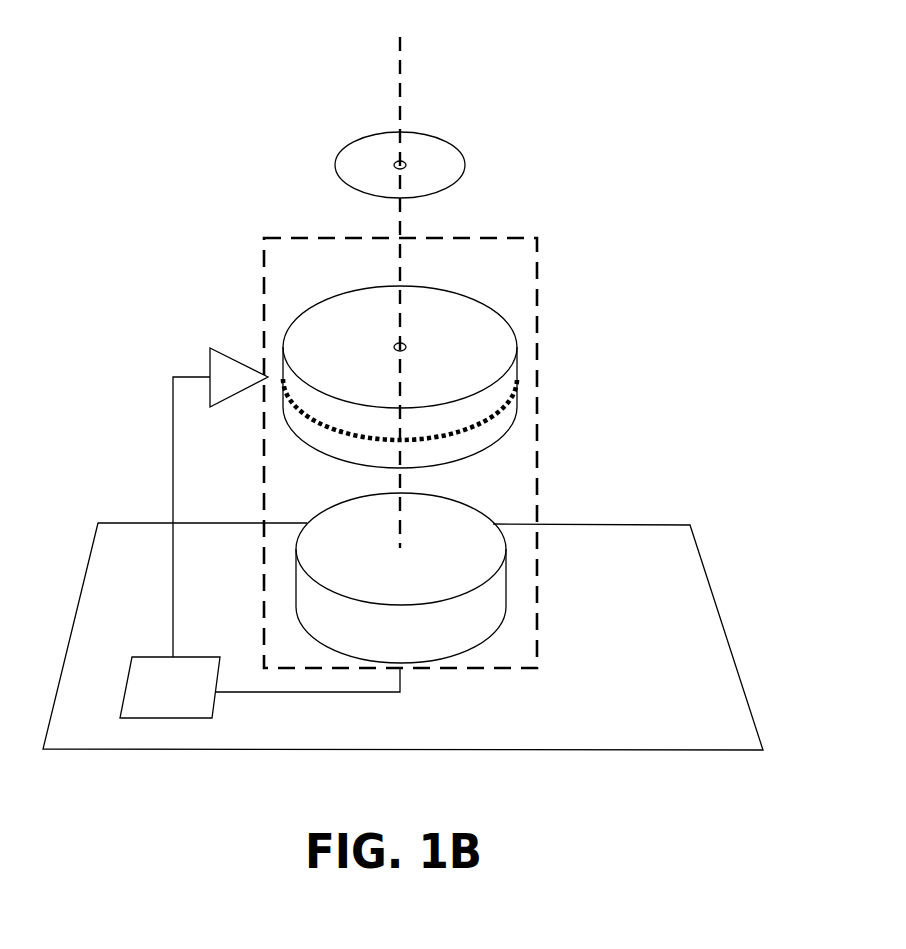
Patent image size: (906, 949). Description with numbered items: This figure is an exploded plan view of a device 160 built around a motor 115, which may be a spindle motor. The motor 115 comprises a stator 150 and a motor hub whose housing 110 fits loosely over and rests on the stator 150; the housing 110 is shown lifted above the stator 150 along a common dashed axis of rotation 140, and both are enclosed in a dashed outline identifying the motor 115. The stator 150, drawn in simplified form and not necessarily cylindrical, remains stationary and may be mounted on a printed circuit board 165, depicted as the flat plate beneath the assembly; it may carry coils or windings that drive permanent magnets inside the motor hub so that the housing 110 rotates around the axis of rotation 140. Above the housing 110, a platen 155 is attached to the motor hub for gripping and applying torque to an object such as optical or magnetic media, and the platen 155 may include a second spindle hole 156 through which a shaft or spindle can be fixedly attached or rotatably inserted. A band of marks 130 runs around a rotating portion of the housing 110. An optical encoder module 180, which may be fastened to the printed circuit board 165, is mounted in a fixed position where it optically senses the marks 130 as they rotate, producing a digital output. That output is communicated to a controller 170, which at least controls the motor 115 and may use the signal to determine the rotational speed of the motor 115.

The housing 110 is at (322, 302).
The motor 115 is at (427, 453).
The marks 130 is at (463, 430).
The axis of rotation 140 is at (402, 73).
The stator 150 is at (337, 505).
The platen 155 is at (357, 140).
The second spindle hole 156 is at (407, 165).
The device 160 is at (112, 322).
The printed circuit board 165 is at (135, 522).
The controller 170 is at (170, 687).
The optical encoder module 180 is at (233, 360).